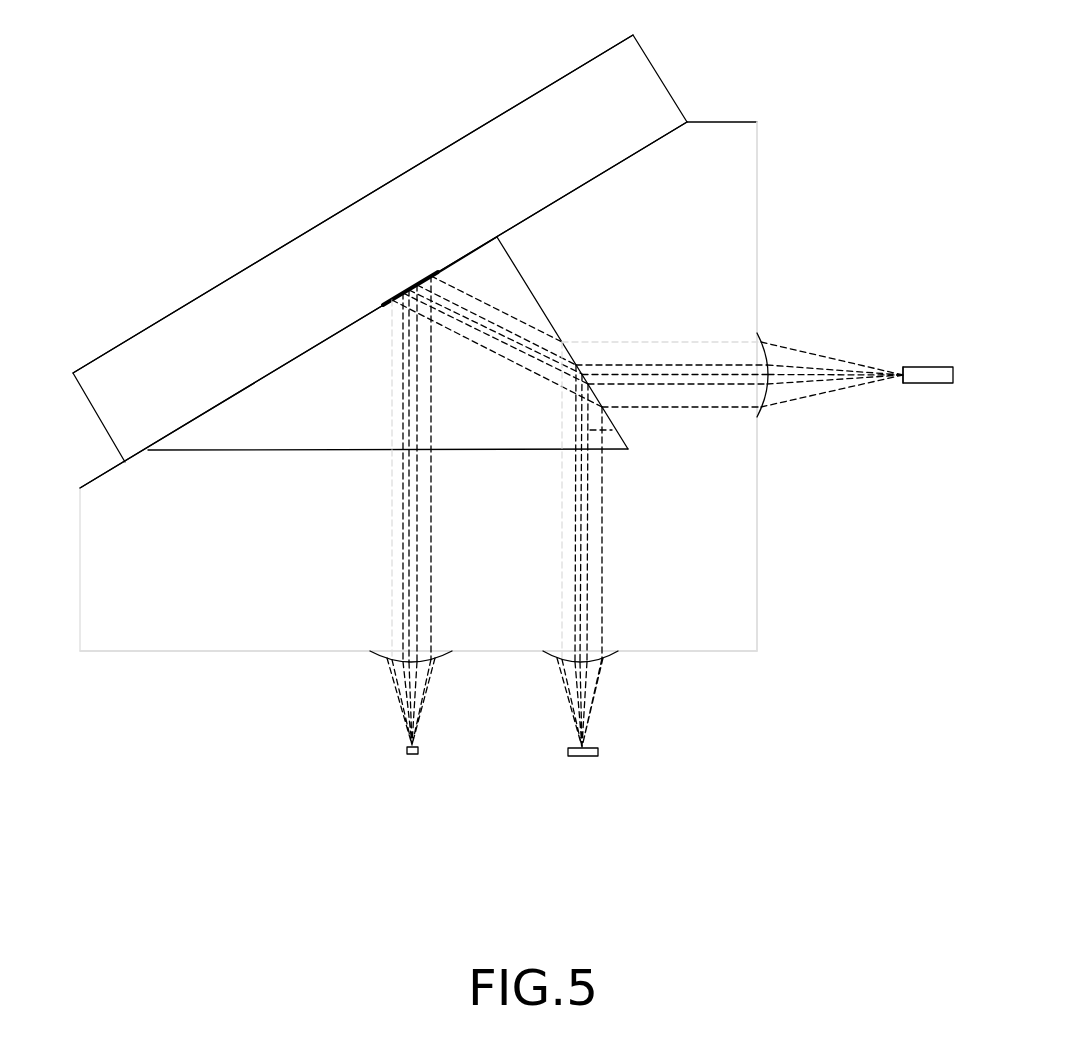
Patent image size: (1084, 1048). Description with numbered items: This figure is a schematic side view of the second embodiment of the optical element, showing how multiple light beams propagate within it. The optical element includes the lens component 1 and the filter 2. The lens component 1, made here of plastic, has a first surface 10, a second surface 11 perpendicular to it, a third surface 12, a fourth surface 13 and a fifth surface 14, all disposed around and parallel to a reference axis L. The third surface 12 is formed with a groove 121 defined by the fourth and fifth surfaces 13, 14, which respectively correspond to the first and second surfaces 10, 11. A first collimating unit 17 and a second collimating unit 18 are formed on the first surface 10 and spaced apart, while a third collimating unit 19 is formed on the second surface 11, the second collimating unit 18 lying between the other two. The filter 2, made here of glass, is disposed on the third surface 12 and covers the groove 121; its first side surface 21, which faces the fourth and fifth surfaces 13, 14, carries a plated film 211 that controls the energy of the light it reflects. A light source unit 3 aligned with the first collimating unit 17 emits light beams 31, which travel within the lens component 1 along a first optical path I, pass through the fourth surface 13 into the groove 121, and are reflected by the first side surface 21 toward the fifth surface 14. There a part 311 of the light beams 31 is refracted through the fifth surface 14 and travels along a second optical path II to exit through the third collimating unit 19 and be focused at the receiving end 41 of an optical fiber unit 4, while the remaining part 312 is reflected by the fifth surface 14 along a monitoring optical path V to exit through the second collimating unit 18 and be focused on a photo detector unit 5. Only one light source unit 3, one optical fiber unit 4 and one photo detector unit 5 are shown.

The lens component 1 is at (156, 662).
The first surface 10 is at (247, 651).
The second surface 11 is at (757, 567).
The third surface 12 is at (618, 162).
The groove 121 is at (477, 272).
The fourth surface 13 is at (227, 448).
The fifth surface 14 is at (514, 270).
The first collimating unit 17 is at (390, 652).
The second collimating unit 18 is at (615, 660).
The third collimating unit 19 is at (762, 393).
The filter 2 is at (204, 275).
The first side surface 21 is at (275, 366).
The plated film 211 is at (398, 297).
The light source unit 3 is at (411, 754).
The light beams 31 is at (425, 693).
The part of the light beams 311 is at (643, 363).
The remaining part of the light beams 312 is at (625, 430).
The optical fiber unit 4 is at (922, 377).
The receiving end 41 is at (900, 370).
The photo detector unit 5 is at (583, 756).
The first optical path I is at (384, 541).
The second optical path II is at (708, 353).
The monitoring optical path V is at (606, 563).
The reference axis L is at (533, 542).